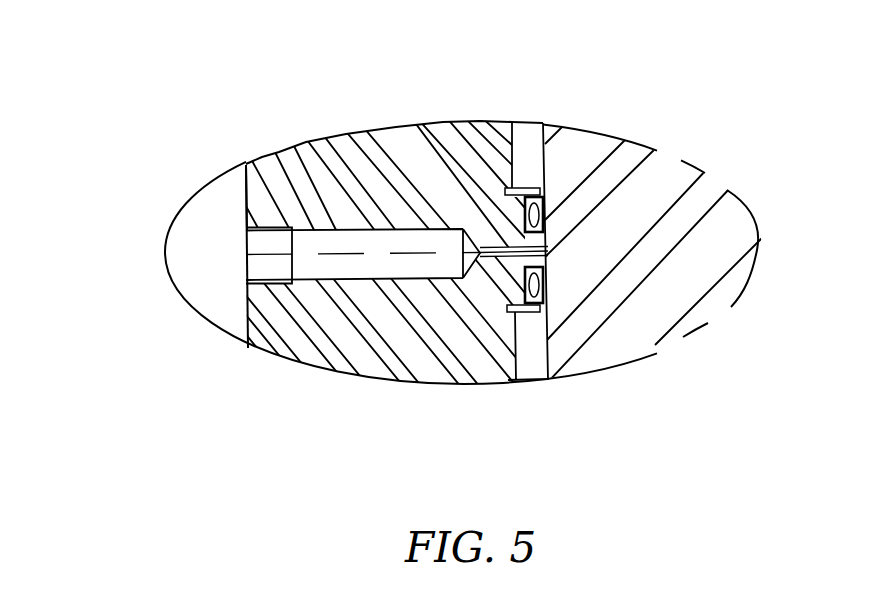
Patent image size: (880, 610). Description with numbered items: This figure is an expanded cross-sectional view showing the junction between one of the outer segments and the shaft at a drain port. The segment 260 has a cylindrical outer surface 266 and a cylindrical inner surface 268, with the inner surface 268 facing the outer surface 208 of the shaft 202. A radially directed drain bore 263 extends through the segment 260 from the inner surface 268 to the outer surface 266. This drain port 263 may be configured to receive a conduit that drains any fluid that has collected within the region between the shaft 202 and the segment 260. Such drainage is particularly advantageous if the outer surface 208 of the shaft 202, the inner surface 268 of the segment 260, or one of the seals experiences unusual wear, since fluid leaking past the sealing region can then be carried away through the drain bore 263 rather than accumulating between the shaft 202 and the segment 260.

The shaft 202 is at (616, 366).
The outer surface of the shaft 208 is at (530, 348).
The segment 260 is at (388, 386).
The drain bore 263 is at (232, 255).
The cylindrical outer surface 266 is at (232, 196).
The cylindrical inner surface 268 is at (525, 139).